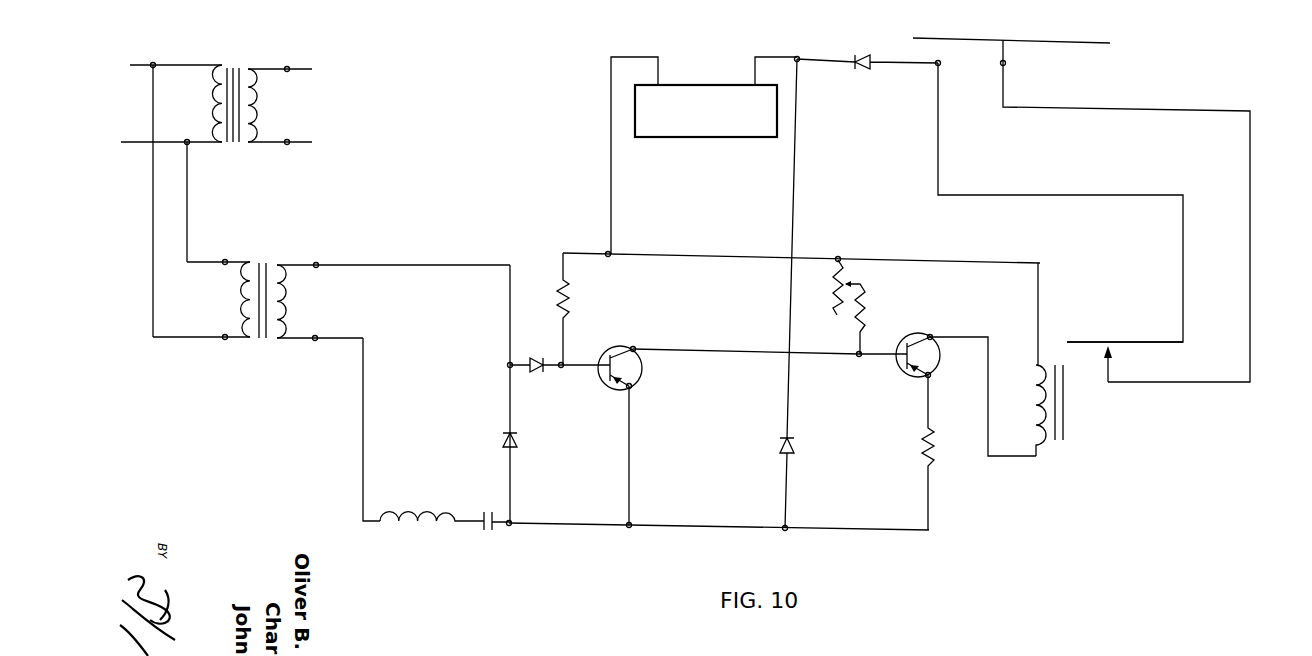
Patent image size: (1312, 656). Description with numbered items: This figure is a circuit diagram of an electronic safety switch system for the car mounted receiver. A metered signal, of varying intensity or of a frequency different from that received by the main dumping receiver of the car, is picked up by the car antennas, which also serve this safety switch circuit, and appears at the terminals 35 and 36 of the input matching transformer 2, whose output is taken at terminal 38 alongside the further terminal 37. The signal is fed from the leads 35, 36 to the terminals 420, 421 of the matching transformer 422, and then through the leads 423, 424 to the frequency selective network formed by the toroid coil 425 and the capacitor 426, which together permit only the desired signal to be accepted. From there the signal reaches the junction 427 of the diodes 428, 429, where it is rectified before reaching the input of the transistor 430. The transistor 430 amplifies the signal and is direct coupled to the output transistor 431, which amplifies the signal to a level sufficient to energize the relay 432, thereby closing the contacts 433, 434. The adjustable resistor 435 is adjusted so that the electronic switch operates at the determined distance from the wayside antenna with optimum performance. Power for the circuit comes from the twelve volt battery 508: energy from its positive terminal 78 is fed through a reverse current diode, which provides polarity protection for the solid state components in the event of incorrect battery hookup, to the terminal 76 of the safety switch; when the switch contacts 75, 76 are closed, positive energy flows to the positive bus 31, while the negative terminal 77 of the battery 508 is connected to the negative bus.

The input matching transformer 2 is at (237, 62).
The positive bus 31 is at (1088, 44).
The terminal of input matching transformer 35 is at (153, 62).
The terminal of input matching transformer 36 is at (187, 140).
The terminal 37 is at (288, 67).
The output terminal of matching transformer 38 is at (288, 140).
The pressure switch contact 75 is at (1006, 63).
The safety switch terminal 76 is at (941, 63).
The negative terminal of battery 77 is at (648, 155).
The positive terminal of battery 78 is at (768, 71).
The 12 volt battery 508 is at (682, 138).
The terminal of matching transformer 420 is at (225, 259).
The terminal of matching transformer 421 is at (223, 339).
The matching transformer 422 is at (264, 262).
The lead 423 is at (318, 263).
The lead 424 is at (316, 341).
The toroid coil 425 is at (386, 510).
The capacitor 426 is at (485, 508).
The junction of diodes 427 is at (508, 364).
The diode 428 is at (519, 437).
The diode 429 is at (539, 372).
The transistor 430 is at (643, 372).
The output transistor 431 is at (918, 335).
The relay 432 is at (1070, 418).
The relay contact 433 is at (1125, 383).
The relay contact 434 is at (1124, 345).
The adjustable resistor 435 is at (853, 280).